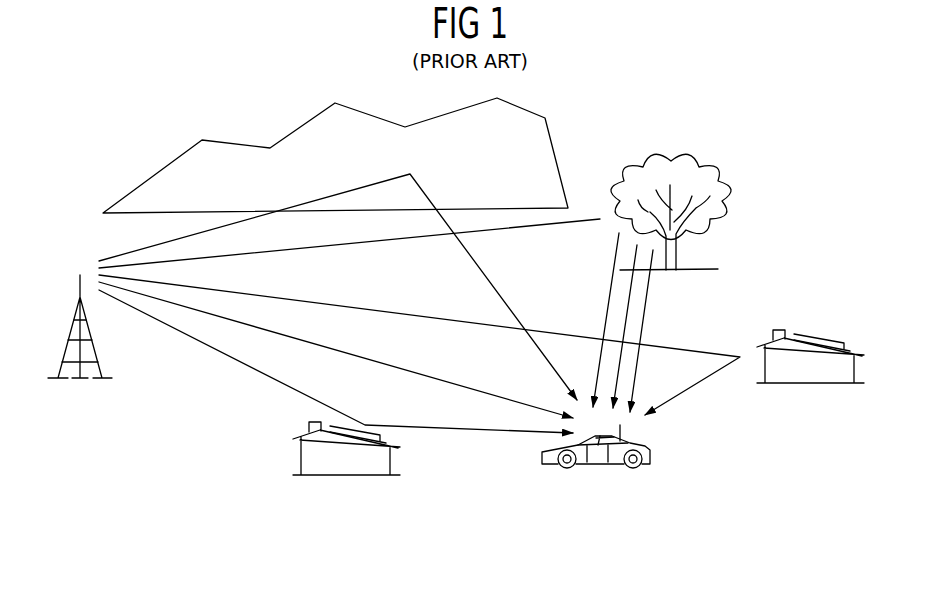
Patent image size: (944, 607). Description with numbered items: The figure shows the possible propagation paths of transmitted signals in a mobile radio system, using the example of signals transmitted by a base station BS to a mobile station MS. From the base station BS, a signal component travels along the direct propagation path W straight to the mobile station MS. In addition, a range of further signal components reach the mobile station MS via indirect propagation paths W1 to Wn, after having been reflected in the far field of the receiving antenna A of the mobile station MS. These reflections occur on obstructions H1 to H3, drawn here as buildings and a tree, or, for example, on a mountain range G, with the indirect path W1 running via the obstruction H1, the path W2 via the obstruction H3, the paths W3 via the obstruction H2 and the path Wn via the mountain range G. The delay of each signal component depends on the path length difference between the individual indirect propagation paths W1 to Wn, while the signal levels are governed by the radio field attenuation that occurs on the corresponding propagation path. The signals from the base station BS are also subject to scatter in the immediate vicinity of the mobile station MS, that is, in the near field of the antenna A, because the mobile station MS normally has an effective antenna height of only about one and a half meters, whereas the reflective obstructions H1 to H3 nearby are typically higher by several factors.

The mountain range G is at (528, 137).
The base station BS is at (72, 368).
The mobile station MS is at (598, 456).
The receiving antenna A is at (622, 432).
The obstruction H1 is at (347, 460).
The obstruction H2 is at (710, 203).
The obstruction H3 is at (813, 370).
The direct propagation path W is at (385, 357).
The indirect propagation path W1 is at (233, 362).
The indirect propagation path W2 is at (350, 303).
The indirect propagation path W3 is at (652, 323).
The indirect propagation path Wn is at (497, 287).